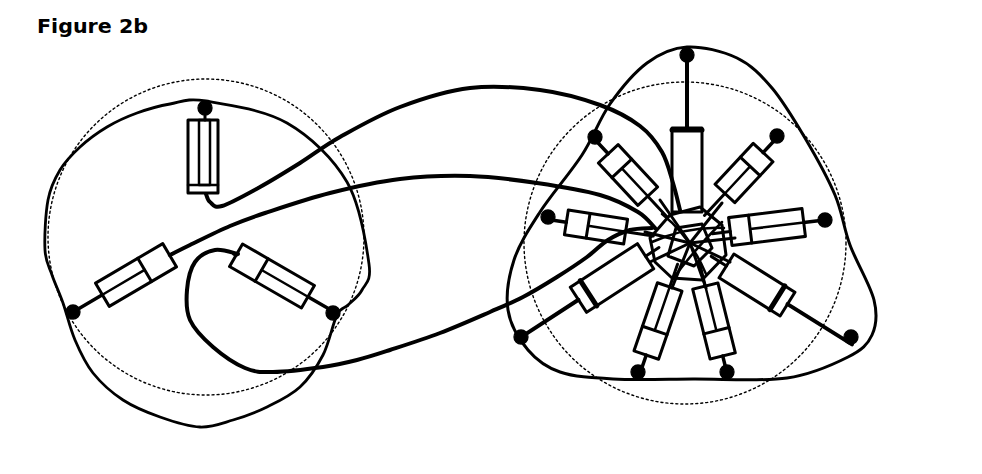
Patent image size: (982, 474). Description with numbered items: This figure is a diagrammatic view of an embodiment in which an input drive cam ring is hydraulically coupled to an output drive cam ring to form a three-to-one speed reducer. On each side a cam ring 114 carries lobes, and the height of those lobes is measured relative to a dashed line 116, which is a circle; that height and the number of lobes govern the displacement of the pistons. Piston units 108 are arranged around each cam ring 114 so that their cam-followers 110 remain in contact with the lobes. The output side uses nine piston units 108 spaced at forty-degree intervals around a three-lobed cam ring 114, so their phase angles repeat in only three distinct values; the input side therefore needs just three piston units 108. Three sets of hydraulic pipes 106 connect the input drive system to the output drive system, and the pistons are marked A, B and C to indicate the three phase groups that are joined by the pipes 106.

The hydraulic pipes 106 is at (443, 127).
The piston units 108 is at (460, 237).
The cam-followers 110 is at (419, 300).
The cam ring 114 is at (413, 308).
The dashed line 116 is at (447, 241).
The actuator A is at (512, 202).
The actuator B is at (449, 252).
The actuator C is at (507, 259).